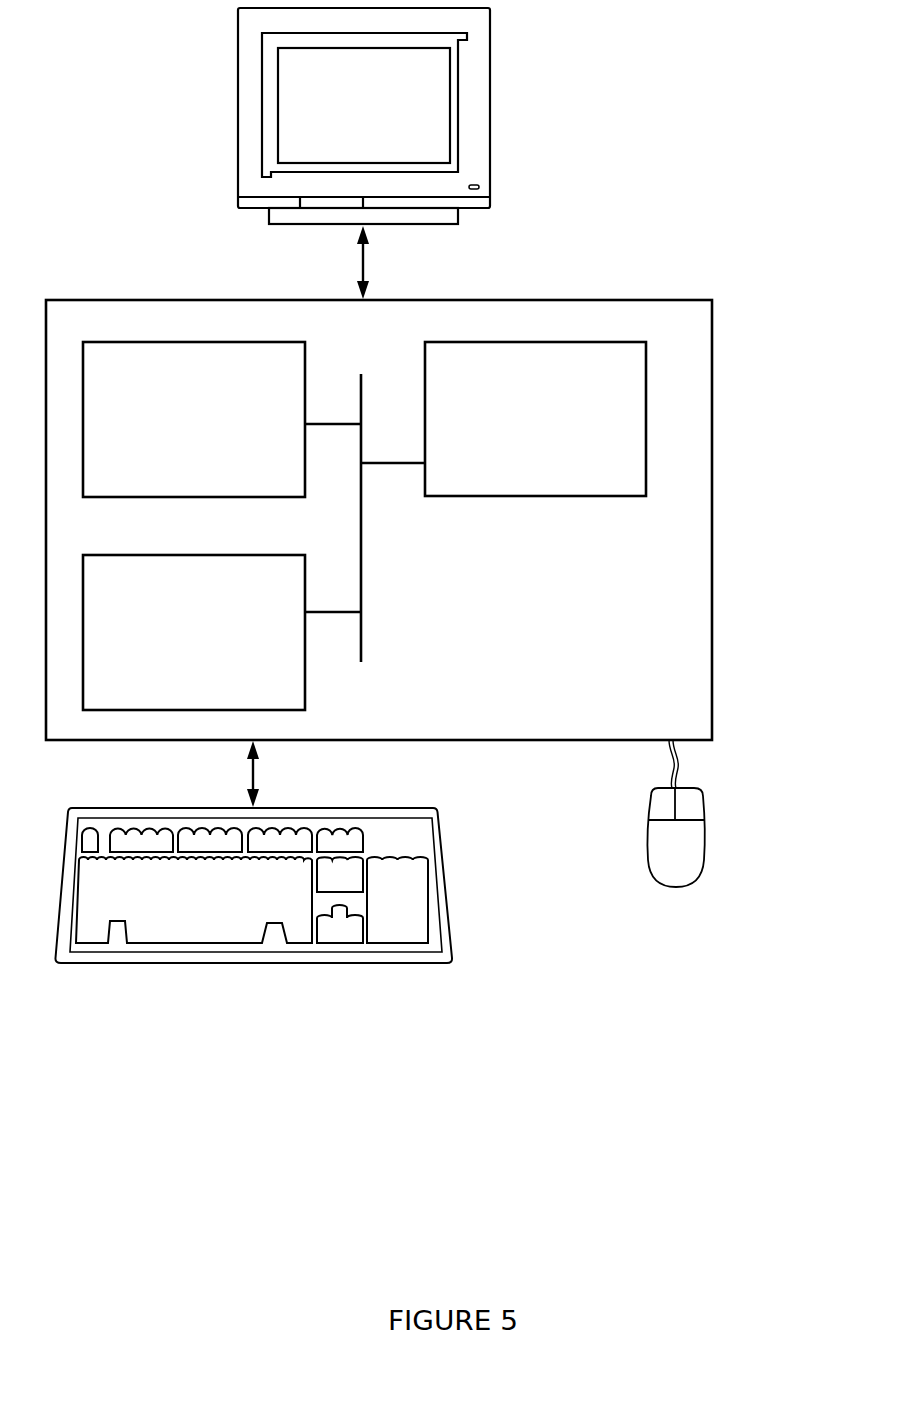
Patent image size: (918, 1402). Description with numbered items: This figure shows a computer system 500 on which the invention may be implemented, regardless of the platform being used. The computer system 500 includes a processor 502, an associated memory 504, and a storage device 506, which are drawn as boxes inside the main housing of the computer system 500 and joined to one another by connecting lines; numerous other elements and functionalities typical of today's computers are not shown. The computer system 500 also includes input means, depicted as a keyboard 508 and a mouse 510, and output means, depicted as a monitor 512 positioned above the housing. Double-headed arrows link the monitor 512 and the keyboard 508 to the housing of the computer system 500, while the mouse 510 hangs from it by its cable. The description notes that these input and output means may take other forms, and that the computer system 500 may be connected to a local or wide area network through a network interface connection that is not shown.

The computer system 500 is at (725, 163).
The processor 502 is at (531, 427).
The memory 504 is at (172, 429).
The storage device 506 is at (168, 642).
The keyboard 508 is at (165, 922).
The mouse 510 is at (653, 857).
The monitor 512 is at (341, 121).